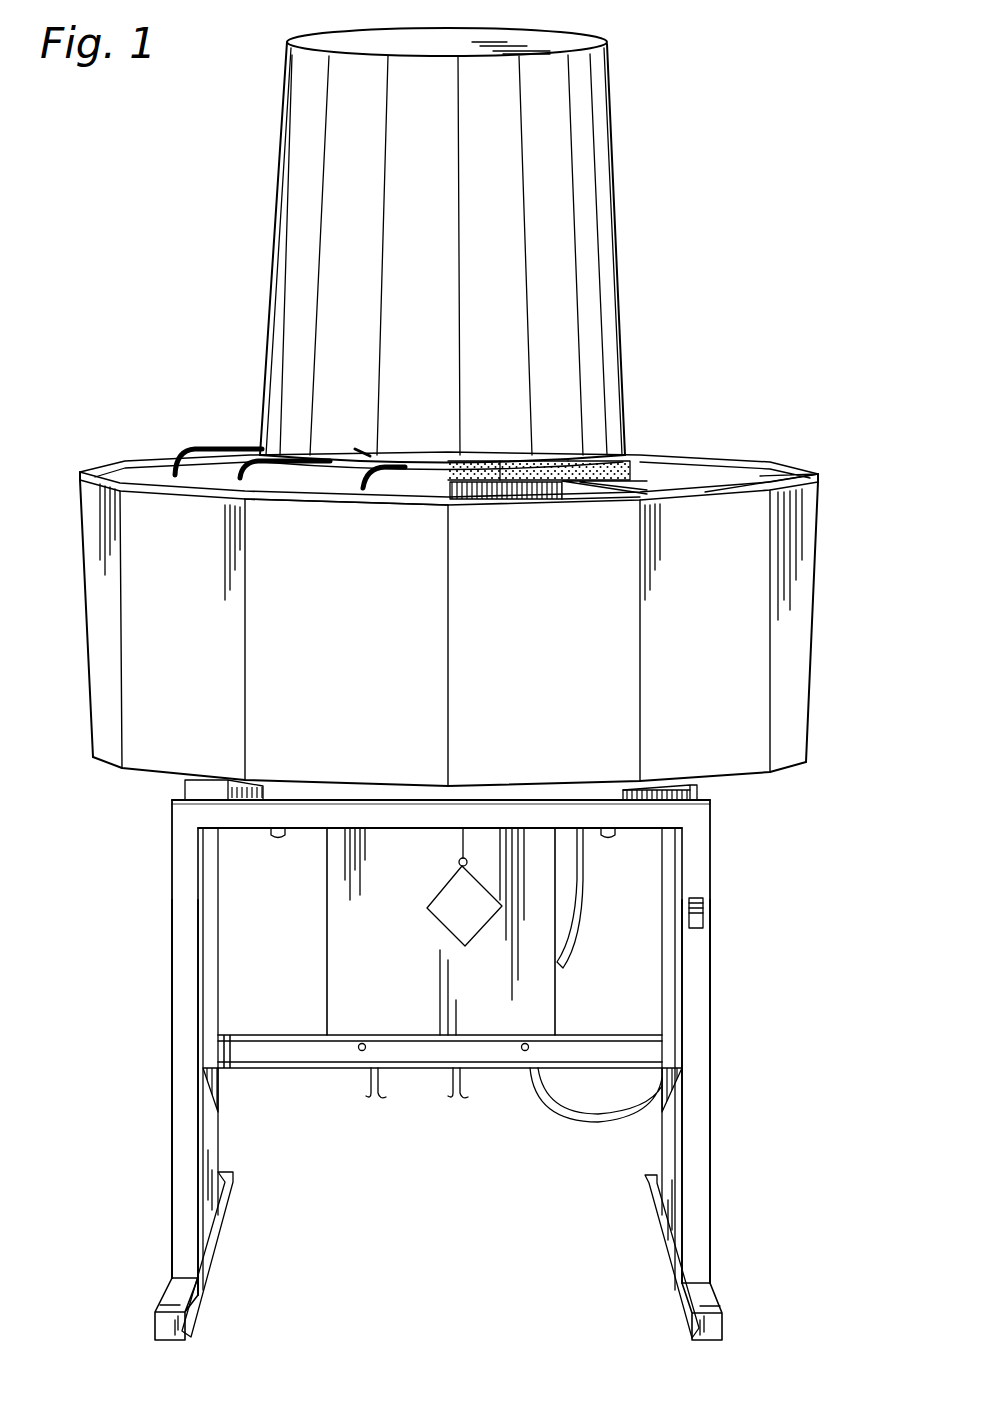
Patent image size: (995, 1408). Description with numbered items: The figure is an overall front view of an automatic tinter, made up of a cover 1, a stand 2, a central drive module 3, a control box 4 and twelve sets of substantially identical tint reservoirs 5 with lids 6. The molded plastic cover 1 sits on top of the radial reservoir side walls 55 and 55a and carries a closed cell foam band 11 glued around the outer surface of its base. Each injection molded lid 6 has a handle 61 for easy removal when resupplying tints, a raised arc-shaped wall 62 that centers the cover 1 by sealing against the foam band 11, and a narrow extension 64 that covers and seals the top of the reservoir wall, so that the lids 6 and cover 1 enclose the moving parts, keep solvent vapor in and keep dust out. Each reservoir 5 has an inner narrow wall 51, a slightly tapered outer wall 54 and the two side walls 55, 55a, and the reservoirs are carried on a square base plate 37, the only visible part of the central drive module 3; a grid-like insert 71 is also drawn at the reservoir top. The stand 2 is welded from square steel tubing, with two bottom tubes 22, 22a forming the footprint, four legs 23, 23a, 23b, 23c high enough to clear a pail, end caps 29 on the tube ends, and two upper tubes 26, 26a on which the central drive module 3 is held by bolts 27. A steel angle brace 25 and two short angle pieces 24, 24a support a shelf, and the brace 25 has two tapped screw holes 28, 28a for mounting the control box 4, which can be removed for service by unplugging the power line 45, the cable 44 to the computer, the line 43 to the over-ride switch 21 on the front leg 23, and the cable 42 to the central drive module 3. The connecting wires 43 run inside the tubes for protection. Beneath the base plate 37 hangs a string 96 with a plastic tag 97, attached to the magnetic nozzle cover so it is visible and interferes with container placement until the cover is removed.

The cover 1 is at (622, 162).
The closed cell foam band 11 is at (600, 440).
The stand 2 is at (722, 1009).
The central drive module 3 is at (317, 803).
The control box 4 is at (446, 975).
The tint reservoir 5 is at (808, 607).
The lid 6 is at (335, 470).
The handle 61 is at (358, 456).
The raised arc-shaped wall 62 is at (410, 466).
The narrow extension 64 is at (348, 503).
The side wall 55 is at (450, 460).
The side wall 55a is at (560, 470).
The inner narrow wall 51 is at (503, 455).
The grid insert 71 is at (490, 503).
The outer wall 54 is at (528, 573).
The base plate 37 is at (580, 795).
The upper tube 26 is at (668, 815).
The upper tube 26a is at (700, 792).
The bolt 27 is at (278, 838).
The string 96 is at (461, 846).
The plastic tag 97 is at (430, 910).
The cable 42 is at (583, 905).
The over-ride switch 21 is at (705, 912).
The brace 25 is at (600, 1037).
The tapped screw hole 28 is at (358, 1052).
The tapped screw hole 28a is at (525, 1060).
The power line 45 is at (384, 1097).
The cable 44 is at (463, 1097).
The connecting wires 43 is at (600, 1118).
The angle piece 24a is at (200, 1078).
The angle piece 24 is at (684, 1075).
The leg 23a is at (190, 1176).
The leg 23b is at (205, 1135).
The front leg 23 is at (712, 1182).
The leg 23c is at (690, 1138).
The bottom tube 22a is at (238, 1235).
The bottom tube 22 is at (645, 1238).
The end cap 29 is at (190, 1330).